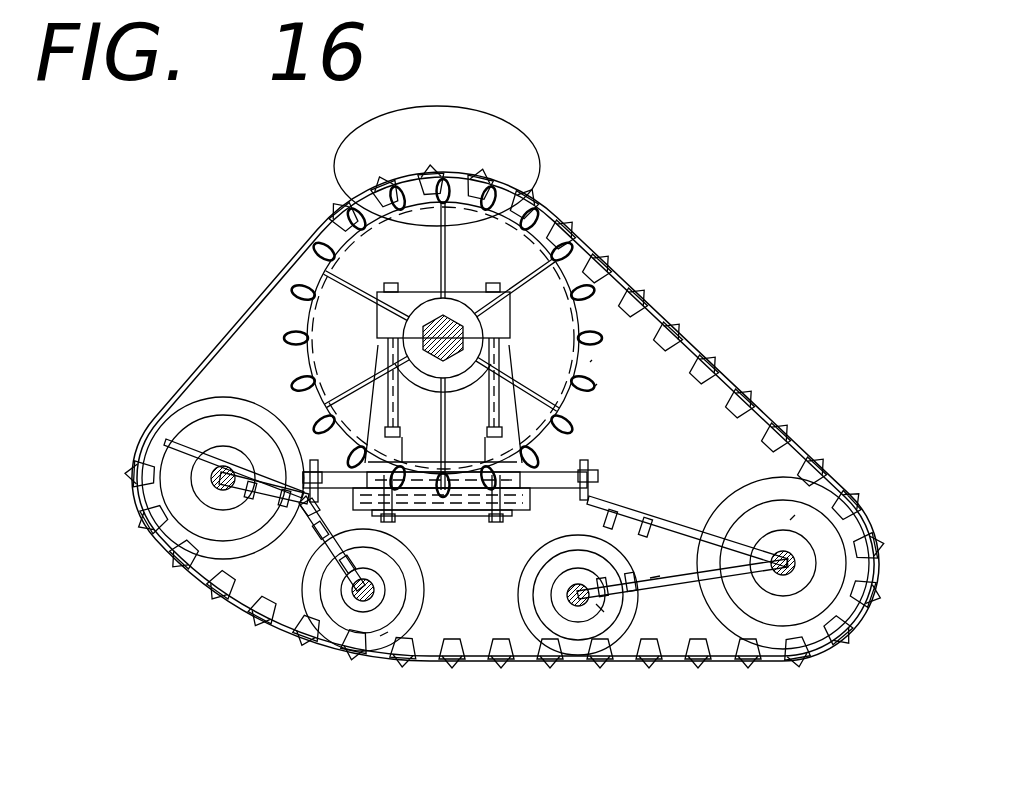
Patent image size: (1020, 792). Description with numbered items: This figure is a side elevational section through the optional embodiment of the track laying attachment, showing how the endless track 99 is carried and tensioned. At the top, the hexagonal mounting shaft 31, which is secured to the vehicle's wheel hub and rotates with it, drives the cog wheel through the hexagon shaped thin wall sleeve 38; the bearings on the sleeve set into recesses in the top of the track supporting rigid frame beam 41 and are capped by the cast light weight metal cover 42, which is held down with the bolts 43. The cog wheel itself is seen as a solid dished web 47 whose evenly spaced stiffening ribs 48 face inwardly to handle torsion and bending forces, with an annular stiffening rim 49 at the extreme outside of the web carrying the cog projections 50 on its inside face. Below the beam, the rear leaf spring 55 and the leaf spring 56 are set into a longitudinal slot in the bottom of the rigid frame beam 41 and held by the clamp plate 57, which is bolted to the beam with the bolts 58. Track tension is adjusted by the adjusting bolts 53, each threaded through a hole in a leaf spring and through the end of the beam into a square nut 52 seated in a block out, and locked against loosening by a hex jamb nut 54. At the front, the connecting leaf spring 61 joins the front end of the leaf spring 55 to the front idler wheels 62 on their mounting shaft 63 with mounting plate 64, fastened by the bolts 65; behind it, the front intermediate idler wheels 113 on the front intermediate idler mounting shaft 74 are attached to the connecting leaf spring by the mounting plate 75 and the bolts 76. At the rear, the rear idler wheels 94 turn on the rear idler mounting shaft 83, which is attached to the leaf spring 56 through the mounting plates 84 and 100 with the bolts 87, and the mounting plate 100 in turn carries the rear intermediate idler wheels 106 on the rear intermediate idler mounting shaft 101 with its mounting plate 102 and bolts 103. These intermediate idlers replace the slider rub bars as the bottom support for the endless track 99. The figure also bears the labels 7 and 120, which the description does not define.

The vehicle body 7 is at (530, 142).
The mounting shaft 31 is at (432, 325).
The hexagon shaped thin wall sleeve 38 is at (425, 328).
The track supporting rigid frame beam 41 is at (378, 358).
The cast light weight metal cover 42 is at (440, 322).
The bolts 43 is at (492, 283).
The solid dished web 47 is at (523, 273).
The stiffening ribs 48 is at (548, 340).
The annular stiffening rim 49 is at (595, 386).
The cog projections 50 is at (590, 362).
The square nut 52 is at (508, 520).
The endless track tension adjusting bolt 53 is at (240, 402).
The hex jamb nut 54 is at (318, 460).
The rear leaf spring 55 is at (590, 460).
The leaf spring 56 is at (775, 505).
The clamp plate 57 is at (438, 513).
The bolts 58 is at (492, 515).
The connecting leaf spring 61 is at (305, 527).
The front idler wheels 62 is at (300, 413).
The front idler mounting shaft 63 is at (211, 480).
The mounting plate 64 is at (245, 522).
The bolts 65 is at (255, 495).
The front intermediate idler mounting shaft 74 is at (360, 597).
The mounting plate 75 is at (345, 574).
The bolts 76 is at (320, 540).
The rear idler wheel mounting shaft 83 is at (792, 580).
The mounting plate 84 is at (587, 517).
The bolts 87 is at (650, 515).
The rear idler wheels 94 is at (823, 540).
The endless track 99 is at (572, 335).
The mounting plate 100 is at (700, 577).
The rear intermediate idler mounting shaft 101 is at (576, 602).
The mounting plate 102 is at (660, 585).
The bolts 103 is at (628, 585).
The rear intermediate idler wheels 106 is at (598, 608).
The front intermediate idler wheels 113 is at (385, 634).
The guide lug 120 is at (748, 425).